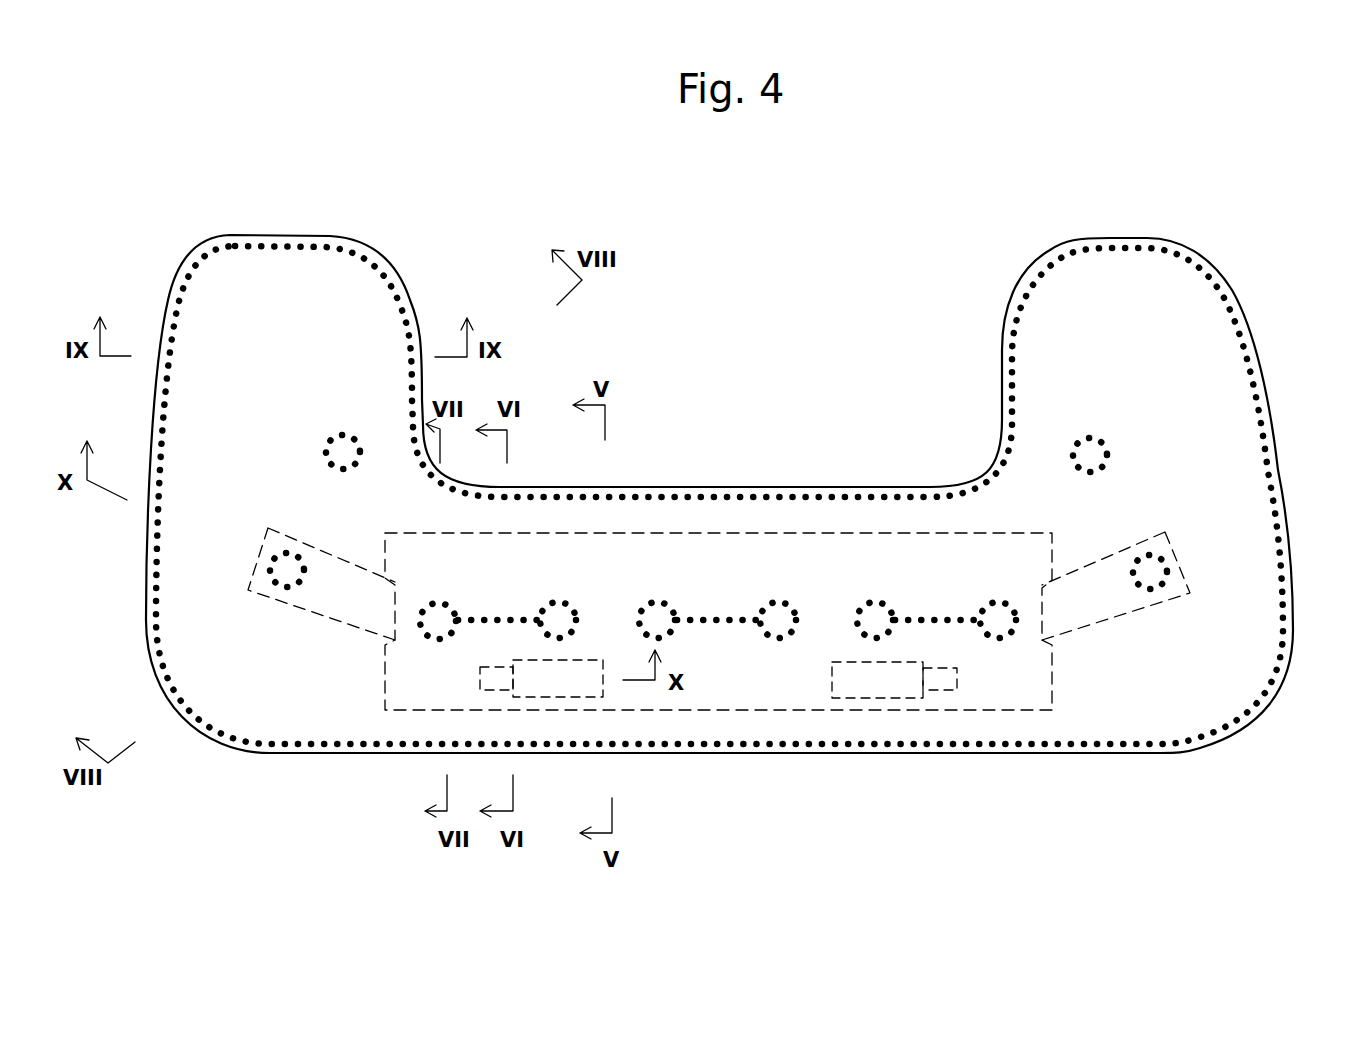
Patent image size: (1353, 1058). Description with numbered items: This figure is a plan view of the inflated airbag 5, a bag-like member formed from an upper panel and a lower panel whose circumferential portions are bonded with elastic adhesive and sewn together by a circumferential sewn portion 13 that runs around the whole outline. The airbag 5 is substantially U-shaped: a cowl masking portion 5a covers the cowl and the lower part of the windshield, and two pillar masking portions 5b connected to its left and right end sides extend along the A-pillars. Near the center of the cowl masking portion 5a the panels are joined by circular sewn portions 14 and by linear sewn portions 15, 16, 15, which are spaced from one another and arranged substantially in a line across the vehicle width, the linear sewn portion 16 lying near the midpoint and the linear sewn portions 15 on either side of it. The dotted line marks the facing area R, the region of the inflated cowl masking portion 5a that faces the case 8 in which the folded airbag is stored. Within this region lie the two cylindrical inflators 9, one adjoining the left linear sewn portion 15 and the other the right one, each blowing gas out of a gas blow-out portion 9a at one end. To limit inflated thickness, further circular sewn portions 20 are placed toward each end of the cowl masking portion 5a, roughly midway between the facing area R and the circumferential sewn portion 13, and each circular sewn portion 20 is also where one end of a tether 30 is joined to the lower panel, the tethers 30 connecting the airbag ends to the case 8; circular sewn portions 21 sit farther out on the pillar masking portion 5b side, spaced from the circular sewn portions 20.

The airbag 5 is at (1046, 188).
The cowl masking portion 5a is at (717, 487).
The pillar masking portion 5b is at (186, 281).
The case 8 is at (1072, 688).
The inflator 9 is at (605, 685).
The gas blow-out portion 9a is at (480, 678).
The circumferential sewn portion 13 is at (308, 247).
The circular sewn portion 14 is at (436, 604).
The linear sewn portion 15 is at (495, 618).
The linear sewn portion 16 is at (722, 618).
The circular sewn portion 20 is at (274, 564).
The circular sewn portion 21 is at (337, 442).
The tether 30 is at (315, 617).
The facing area R is at (810, 560).